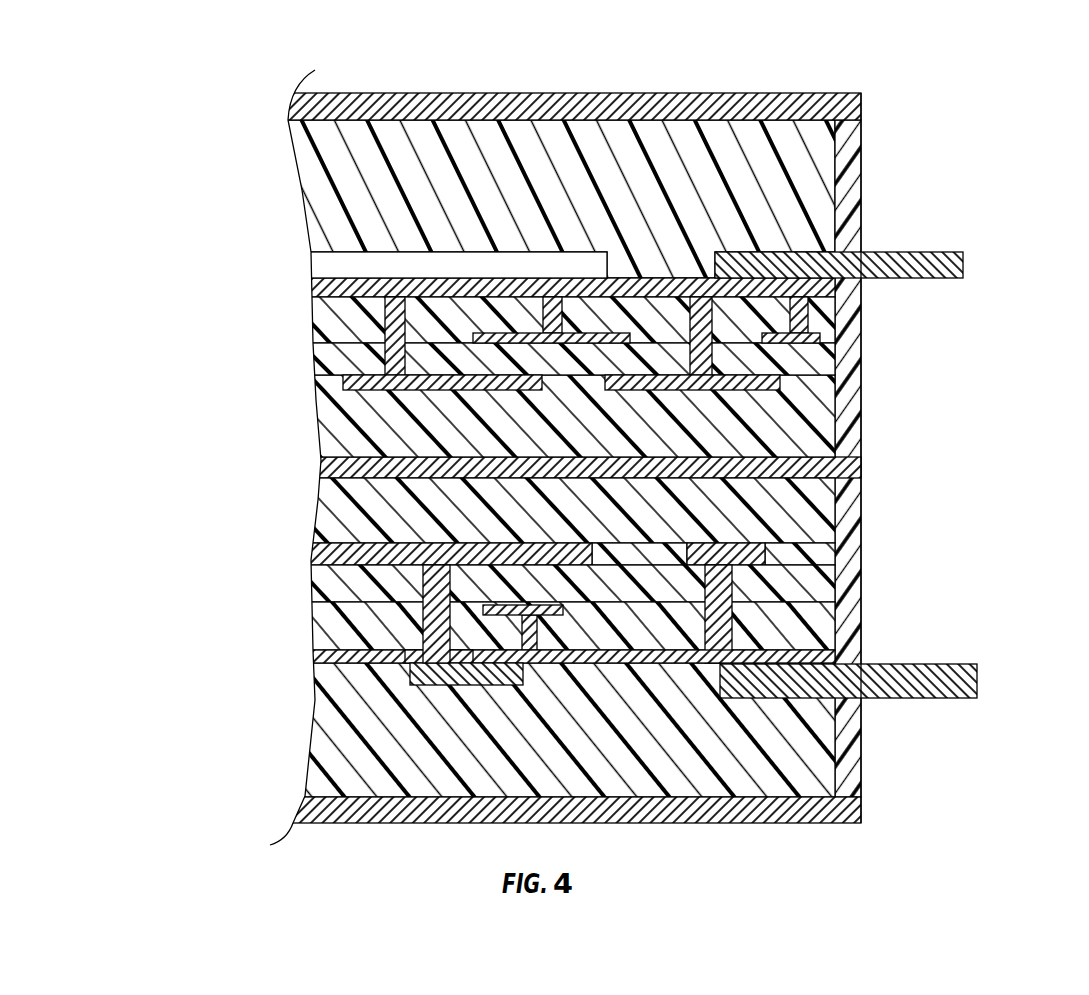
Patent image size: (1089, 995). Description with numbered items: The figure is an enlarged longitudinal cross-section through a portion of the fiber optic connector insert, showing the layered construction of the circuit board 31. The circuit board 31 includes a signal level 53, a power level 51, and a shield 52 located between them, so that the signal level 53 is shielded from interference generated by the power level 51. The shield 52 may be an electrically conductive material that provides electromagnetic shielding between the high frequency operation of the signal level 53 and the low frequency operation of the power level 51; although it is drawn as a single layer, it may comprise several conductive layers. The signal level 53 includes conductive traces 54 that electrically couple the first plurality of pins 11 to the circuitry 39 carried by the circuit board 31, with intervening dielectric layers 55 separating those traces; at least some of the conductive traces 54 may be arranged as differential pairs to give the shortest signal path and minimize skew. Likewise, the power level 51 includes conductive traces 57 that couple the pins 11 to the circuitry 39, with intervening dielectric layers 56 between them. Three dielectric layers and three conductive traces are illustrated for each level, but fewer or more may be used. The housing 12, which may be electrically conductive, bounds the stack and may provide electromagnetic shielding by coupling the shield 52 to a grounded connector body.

The first plurality of pins 11 is at (912, 255).
The housing 12 is at (777, 98).
The circuit board 31 is at (228, 495).
The circuitry 39 is at (330, 262).
The power level 51 is at (863, 478).
The shield 52 is at (810, 163).
The signal level 53 is at (975, 246).
The conductive traces 54 is at (322, 383).
The dielectric layers 55 is at (315, 308).
The dielectric layers 56 is at (323, 510).
The conductive traces 57 is at (428, 595).